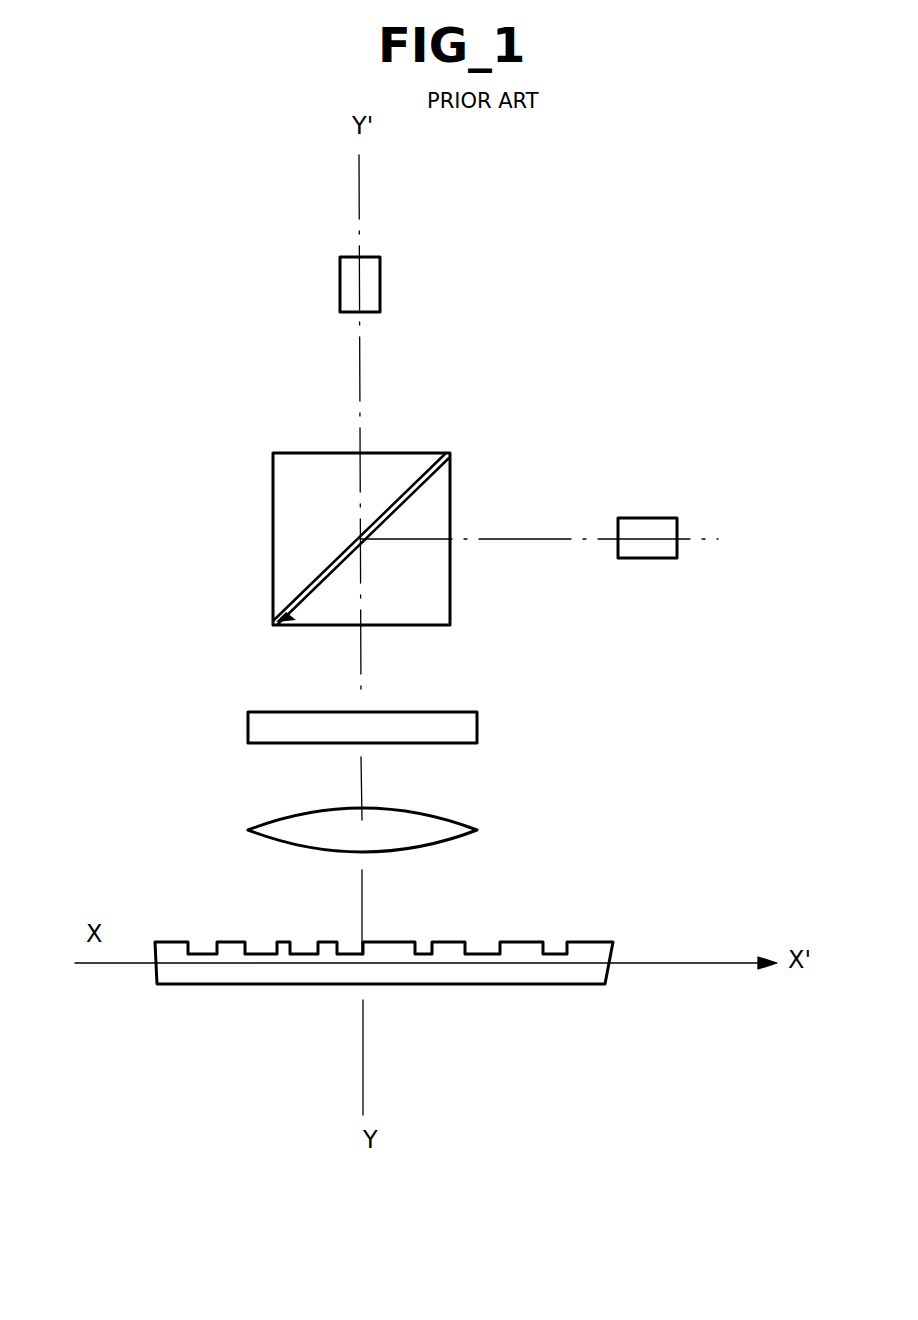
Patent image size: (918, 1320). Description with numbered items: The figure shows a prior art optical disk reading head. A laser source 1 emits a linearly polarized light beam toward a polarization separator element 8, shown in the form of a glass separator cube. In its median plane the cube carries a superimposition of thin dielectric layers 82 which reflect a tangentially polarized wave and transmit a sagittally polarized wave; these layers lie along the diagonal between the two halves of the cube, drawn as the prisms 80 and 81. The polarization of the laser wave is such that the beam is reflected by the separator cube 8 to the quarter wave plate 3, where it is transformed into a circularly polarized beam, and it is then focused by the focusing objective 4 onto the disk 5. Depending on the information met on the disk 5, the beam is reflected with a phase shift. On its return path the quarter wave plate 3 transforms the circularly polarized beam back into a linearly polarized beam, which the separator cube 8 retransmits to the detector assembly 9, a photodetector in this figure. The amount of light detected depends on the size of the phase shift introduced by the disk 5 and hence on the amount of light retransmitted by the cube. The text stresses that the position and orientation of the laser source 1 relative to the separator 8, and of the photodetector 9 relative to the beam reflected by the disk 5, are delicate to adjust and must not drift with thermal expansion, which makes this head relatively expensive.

The laser source 1 is at (648, 518).
The quarter wave plate 3 is at (478, 712).
The focusing objective 4 is at (445, 816).
The disk 5 is at (590, 942).
The polarization separator element 8 is at (288, 548).
The first prism of beam splitter 80 is at (283, 510).
The second prism of beam splitter 81 is at (253, 626).
The thin dielectric layers 82 is at (312, 583).
The detector assembly 9 is at (340, 290).